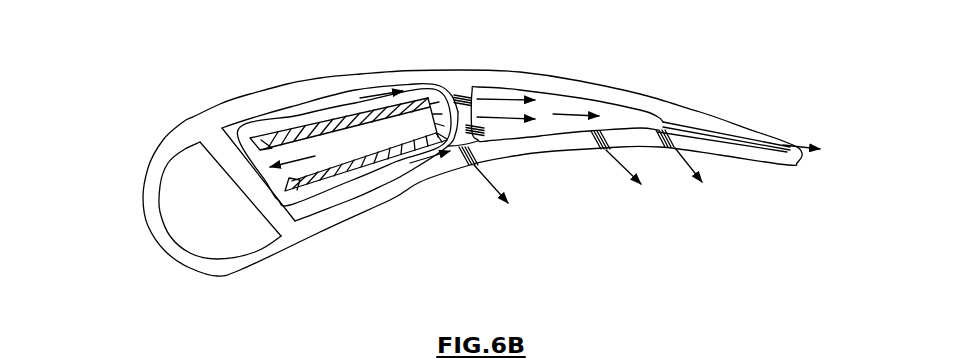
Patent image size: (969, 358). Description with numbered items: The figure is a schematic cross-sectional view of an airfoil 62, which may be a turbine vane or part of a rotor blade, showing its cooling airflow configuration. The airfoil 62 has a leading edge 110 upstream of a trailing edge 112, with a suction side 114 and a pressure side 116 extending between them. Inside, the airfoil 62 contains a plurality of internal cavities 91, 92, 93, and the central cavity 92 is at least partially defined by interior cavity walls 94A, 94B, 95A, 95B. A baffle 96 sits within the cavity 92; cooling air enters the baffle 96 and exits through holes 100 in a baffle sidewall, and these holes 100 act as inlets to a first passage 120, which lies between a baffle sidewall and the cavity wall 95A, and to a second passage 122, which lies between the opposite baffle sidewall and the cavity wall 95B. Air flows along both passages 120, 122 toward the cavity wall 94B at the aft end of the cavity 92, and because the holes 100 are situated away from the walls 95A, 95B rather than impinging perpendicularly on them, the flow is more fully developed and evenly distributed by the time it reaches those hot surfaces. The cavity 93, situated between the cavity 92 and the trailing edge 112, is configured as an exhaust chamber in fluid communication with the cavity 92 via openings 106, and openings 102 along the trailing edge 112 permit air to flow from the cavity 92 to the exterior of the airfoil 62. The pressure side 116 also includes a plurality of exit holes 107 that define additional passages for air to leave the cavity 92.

The airfoil 62 is at (693, 113).
The internal cavity 91 is at (178, 183).
The cavity 92 is at (227, 123).
The cavity 93 is at (573, 100).
The interior cavity wall 94A is at (243, 178).
The interior cavity wall 94B is at (487, 117).
The interior cavity wall 95A is at (297, 93).
The interior cavity wall 95B is at (357, 196).
The baffle 96 is at (364, 116).
The holes 100 is at (285, 173).
The openings 102 is at (784, 141).
The openings 106 is at (462, 94).
The exit holes 107 is at (470, 167).
The leading edge 110 is at (150, 251).
The trailing edge 112 is at (796, 176).
The suction side 114 is at (437, 60).
The pressure side 116 is at (424, 220).
The first passage 120 is at (340, 108).
The second passage 122 is at (321, 206).